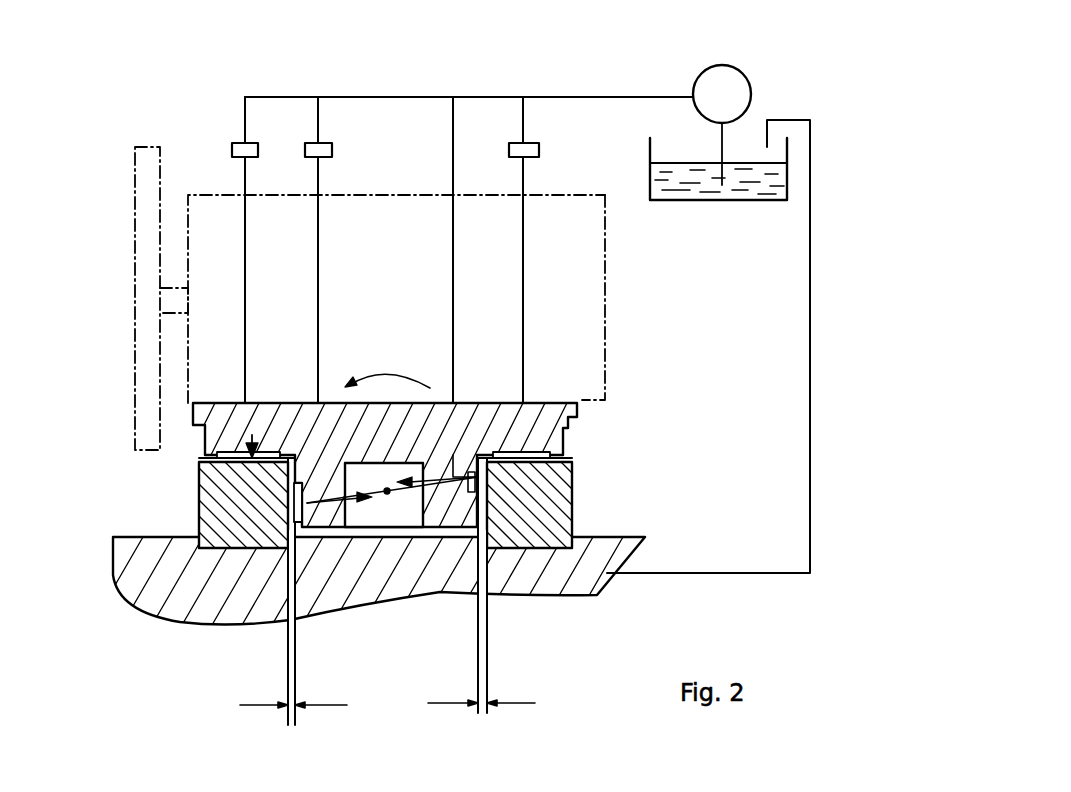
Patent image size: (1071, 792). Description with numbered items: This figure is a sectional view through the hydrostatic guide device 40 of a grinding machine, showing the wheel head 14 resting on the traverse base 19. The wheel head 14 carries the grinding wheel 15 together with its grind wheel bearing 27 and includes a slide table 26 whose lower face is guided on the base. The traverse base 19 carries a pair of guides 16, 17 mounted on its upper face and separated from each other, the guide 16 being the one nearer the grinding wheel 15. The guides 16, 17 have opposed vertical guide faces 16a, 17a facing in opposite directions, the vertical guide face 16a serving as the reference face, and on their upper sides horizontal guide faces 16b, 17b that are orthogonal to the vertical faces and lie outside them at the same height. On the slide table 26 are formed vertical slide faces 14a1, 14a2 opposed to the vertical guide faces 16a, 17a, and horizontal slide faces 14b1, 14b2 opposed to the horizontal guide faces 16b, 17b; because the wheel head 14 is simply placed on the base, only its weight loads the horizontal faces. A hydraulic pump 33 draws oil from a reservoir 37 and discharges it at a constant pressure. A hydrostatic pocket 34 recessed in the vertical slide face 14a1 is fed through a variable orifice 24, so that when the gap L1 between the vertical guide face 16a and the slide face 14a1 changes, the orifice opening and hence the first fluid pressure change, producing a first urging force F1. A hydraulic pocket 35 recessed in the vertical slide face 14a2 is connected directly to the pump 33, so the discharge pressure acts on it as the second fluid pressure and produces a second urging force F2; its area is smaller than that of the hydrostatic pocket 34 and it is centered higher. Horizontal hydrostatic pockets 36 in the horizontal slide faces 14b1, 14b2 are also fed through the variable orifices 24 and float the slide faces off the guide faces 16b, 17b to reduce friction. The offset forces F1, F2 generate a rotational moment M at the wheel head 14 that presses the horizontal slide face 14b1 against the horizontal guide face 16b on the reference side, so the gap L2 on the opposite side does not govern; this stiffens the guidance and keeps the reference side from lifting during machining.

The wheel head 14 is at (624, 257).
The grinding wheel 15 is at (140, 167).
The guide 16 is at (205, 495).
The vertical guide face 16a is at (320, 490).
The horizontal guide face 16b is at (252, 460).
The guide 17 is at (577, 482).
The vertical guide face 17a is at (458, 530).
The horizontal guide face 17b is at (503, 452).
The vertical slide face 14a1 is at (296, 483).
The vertical slide face 14a2 is at (495, 500).
The horizontal slide face 14b1 is at (200, 463).
The horizontal slide face 14b2 is at (620, 452).
The traverse base 19 is at (622, 557).
The variable orifice 24 is at (205, 203).
The slide table 26 is at (578, 417).
The grind wheel bearing 27 is at (605, 300).
The hydraulic pump 33 is at (707, 80).
The hydrostatic pocket 34 is at (333, 535).
The hydraulic pocket 35 is at (403, 530).
The horizontal hydrostatic pocket 36 is at (232, 452).
The reservoir 37 is at (652, 168).
The hydrostatic guide device 40 is at (760, 70).
The first urging force F1 is at (322, 540).
The second urging force F2 is at (463, 478).
The rotational moment M is at (387, 368).
The gap L1 is at (293, 693).
The second gap length L2 is at (480, 692).